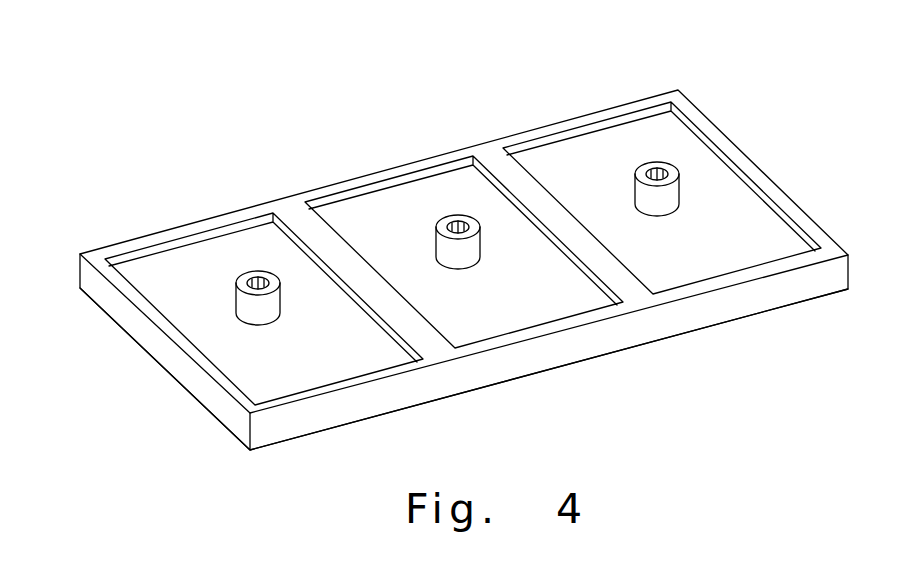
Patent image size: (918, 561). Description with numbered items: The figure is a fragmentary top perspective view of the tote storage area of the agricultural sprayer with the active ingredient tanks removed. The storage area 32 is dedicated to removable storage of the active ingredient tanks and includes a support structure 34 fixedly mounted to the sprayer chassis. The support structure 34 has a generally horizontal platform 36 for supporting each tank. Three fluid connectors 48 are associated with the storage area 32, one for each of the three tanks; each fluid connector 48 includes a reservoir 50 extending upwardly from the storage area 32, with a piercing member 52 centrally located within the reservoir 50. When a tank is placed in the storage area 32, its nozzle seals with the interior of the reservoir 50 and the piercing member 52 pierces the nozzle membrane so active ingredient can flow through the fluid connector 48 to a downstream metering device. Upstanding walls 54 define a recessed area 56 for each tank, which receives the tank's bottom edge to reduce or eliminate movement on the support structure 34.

The storage area 32 is at (451, 238).
The support structure 34 is at (798, 304).
The platform 36 is at (693, 327).
The fluid connector 48 is at (436, 257).
The reservoir 50 is at (237, 302).
The piercing member 52 is at (257, 283).
The upstanding walls 54 is at (233, 222).
The recessed area 56 is at (337, 216).